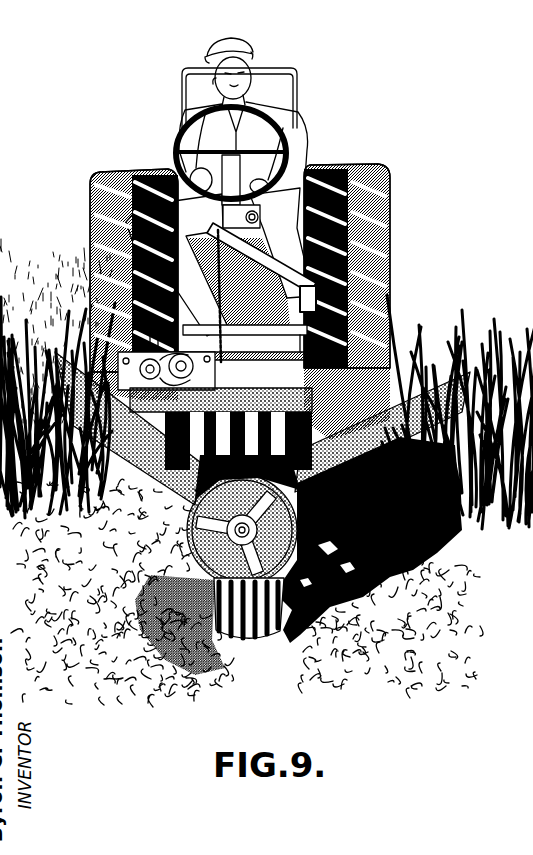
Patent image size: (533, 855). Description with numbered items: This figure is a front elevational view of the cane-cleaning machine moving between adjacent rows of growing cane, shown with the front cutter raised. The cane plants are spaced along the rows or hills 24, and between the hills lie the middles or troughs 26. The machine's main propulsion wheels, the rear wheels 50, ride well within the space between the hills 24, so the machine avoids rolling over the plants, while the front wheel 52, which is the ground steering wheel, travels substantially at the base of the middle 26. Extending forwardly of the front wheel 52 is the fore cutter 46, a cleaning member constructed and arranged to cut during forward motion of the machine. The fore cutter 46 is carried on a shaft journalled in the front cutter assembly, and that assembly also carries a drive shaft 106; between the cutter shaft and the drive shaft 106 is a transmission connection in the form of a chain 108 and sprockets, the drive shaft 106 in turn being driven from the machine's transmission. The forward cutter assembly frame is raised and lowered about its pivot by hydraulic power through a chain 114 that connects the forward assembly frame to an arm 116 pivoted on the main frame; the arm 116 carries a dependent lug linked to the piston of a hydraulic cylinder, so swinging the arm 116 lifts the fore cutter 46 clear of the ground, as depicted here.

The rows or hills of growing cane 24 is at (469, 631).
The middles or troughs 26 is at (222, 710).
The fore cutter 46 is at (204, 486).
The rear wheels 50 is at (97, 192).
The front wheel 52 is at (249, 625).
The drive shaft 106 is at (262, 428).
The chain 108 is at (185, 396).
The chain 114 is at (210, 301).
The arm 116 is at (271, 256).